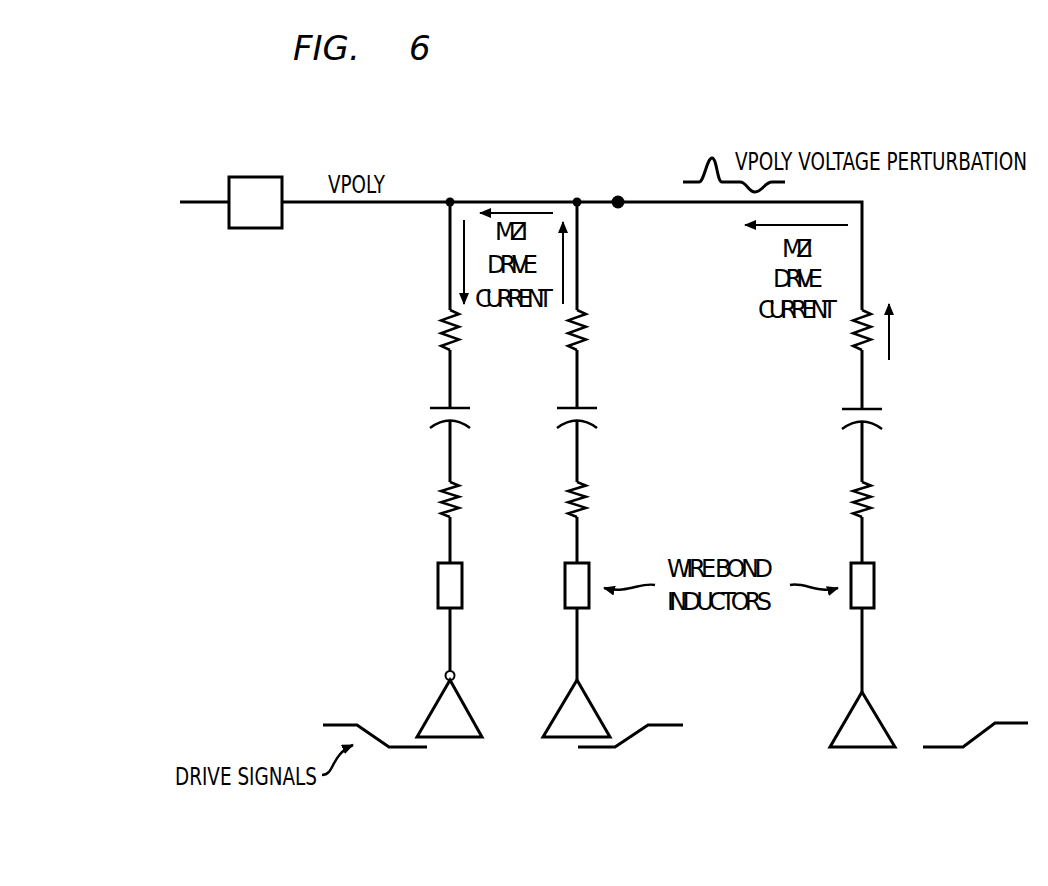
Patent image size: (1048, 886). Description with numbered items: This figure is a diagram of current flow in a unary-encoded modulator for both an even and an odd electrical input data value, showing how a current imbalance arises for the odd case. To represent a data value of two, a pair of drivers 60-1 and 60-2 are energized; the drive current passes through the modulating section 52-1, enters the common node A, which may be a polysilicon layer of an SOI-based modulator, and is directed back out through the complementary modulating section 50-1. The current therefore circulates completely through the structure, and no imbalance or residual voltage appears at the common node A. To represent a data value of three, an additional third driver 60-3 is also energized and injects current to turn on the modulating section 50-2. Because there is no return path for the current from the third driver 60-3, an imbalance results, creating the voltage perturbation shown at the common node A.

The common node A is at (618, 195).
The modulating section 50-1 is at (430, 420).
The modulating section 52-1 is at (600, 420).
The modulating section 50-2 is at (885, 420).
The driver 60-1 is at (437, 716).
The driver 60-2 is at (585, 712).
The third driver 60-3 is at (868, 722).